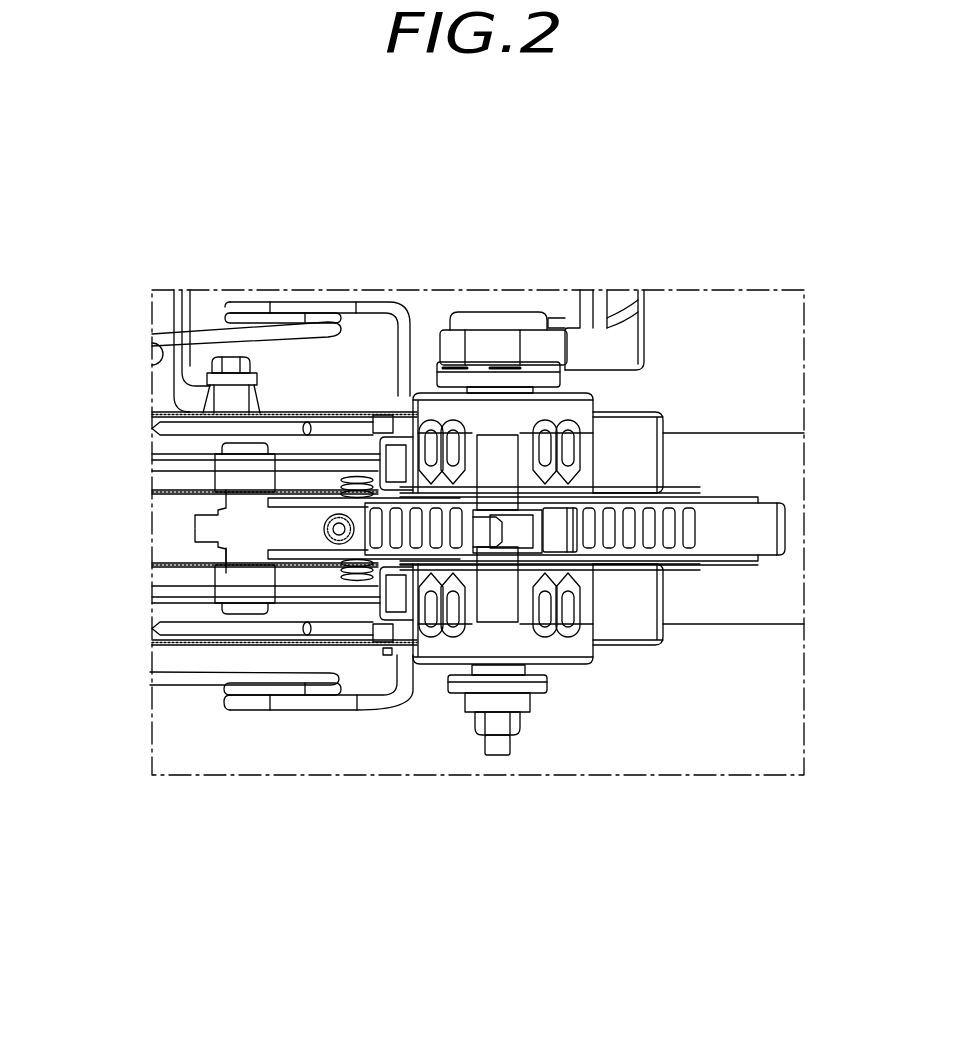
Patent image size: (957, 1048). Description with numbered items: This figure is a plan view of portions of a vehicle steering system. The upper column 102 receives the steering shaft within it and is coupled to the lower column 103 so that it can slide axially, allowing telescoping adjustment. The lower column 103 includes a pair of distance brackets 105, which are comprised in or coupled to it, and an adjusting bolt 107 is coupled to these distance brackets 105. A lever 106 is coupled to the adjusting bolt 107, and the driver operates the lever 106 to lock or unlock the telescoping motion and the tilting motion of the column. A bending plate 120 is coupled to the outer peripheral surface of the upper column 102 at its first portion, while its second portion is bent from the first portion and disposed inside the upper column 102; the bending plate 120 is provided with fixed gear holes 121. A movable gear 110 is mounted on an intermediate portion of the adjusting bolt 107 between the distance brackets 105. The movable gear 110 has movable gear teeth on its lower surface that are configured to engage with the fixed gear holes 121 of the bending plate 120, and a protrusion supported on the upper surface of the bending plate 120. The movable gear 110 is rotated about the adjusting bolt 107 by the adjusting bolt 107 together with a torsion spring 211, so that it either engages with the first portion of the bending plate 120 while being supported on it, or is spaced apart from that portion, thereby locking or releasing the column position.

The upper column 102 is at (737, 456).
The lower column 103 is at (172, 591).
The distance brackets 105 is at (432, 410).
The lever 106 is at (618, 350).
The adjusting bolt 107 is at (499, 318).
The movable gear 110 is at (557, 540).
The bending plate 120 is at (735, 540).
The fixed gear holes 121 is at (693, 518).
The torsion spring 211 is at (343, 481).